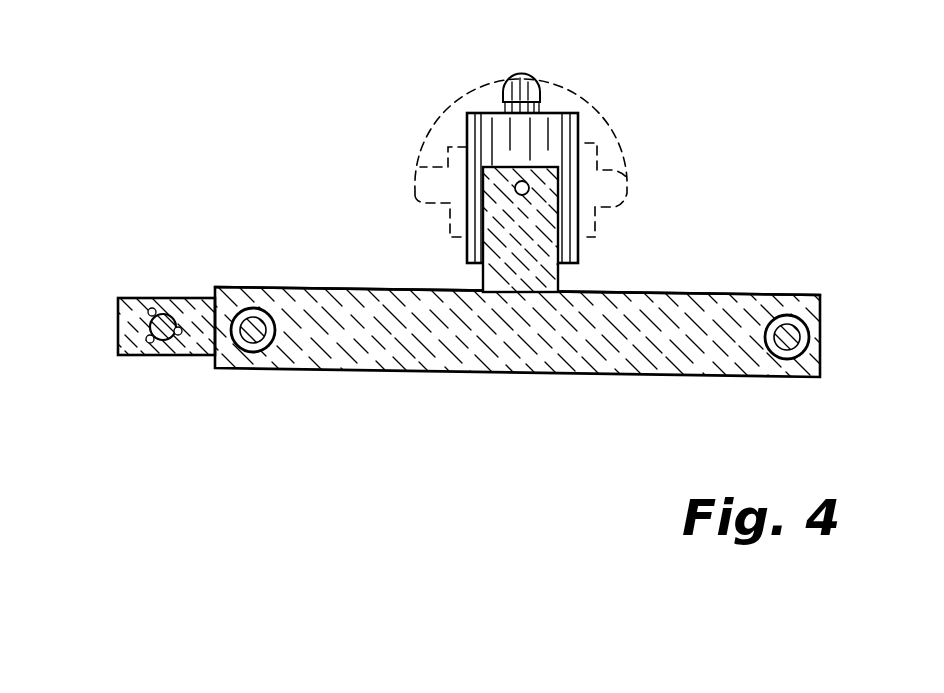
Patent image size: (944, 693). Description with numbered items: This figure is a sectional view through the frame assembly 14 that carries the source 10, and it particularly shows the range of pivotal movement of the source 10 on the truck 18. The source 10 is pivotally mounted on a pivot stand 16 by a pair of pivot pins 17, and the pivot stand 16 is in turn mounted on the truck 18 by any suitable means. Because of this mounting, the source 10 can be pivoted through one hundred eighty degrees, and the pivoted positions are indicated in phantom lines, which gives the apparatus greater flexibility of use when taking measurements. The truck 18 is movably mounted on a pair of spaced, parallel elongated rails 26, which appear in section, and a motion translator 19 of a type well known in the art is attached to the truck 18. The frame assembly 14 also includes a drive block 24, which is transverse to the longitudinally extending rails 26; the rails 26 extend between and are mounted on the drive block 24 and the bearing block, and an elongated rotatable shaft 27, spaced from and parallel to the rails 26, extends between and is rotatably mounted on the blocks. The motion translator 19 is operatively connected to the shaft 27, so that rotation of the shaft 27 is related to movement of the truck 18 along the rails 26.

The source 10 is at (557, 113).
The frame assembly 14 is at (471, 382).
The pivot stand 16 is at (540, 278).
The pivot pins 17 is at (529, 184).
The truck 18 is at (567, 333).
The motion translator 19 is at (118, 318).
The drive block 24 is at (697, 327).
The rails 26 is at (243, 307).
The shaft 27 is at (170, 298).